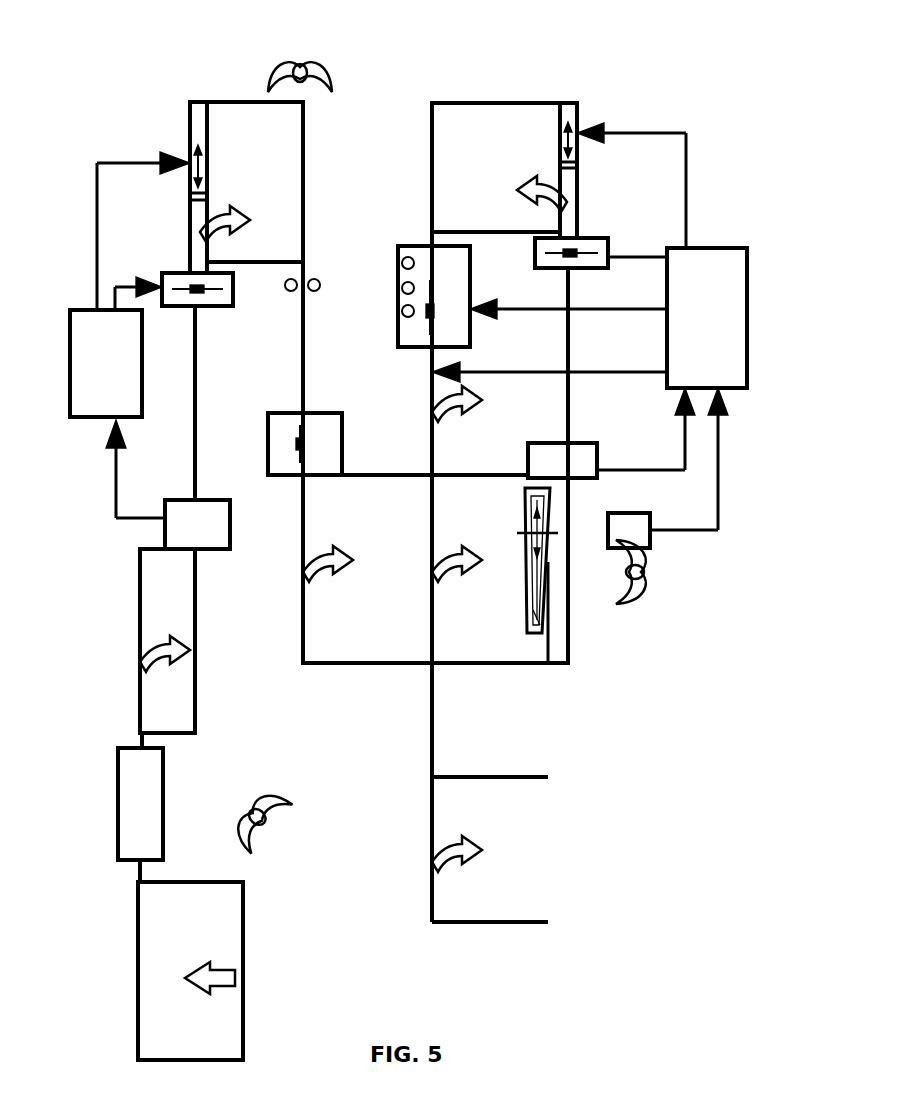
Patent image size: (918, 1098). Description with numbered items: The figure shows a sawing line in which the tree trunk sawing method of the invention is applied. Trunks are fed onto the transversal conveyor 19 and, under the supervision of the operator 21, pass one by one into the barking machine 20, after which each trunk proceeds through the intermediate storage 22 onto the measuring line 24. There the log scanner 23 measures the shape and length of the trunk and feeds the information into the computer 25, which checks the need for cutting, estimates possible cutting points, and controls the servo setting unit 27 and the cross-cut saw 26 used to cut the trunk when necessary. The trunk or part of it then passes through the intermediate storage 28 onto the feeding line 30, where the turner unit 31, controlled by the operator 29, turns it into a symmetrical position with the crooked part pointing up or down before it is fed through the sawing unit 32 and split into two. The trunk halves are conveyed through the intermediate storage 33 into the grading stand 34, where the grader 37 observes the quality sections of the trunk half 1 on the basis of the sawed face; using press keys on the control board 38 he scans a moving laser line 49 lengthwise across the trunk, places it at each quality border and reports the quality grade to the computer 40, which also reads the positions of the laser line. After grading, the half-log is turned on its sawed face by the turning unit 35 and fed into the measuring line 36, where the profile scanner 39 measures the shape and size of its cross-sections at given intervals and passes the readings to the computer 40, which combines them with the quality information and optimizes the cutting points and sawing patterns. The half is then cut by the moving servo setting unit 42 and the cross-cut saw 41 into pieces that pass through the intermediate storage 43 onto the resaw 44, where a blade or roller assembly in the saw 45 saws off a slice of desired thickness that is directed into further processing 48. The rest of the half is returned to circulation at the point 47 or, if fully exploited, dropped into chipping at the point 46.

The trunk half 1 is at (535, 612).
The transversal conveyor 19 is at (240, 1022).
The barking machine 20 is at (128, 805).
The operator 21 is at (272, 805).
The intermediate storage 22 is at (140, 640).
The log scanner 23 is at (205, 540).
The measuring line 24 is at (197, 385).
The computer 25 is at (95, 408).
The cross-cut saw 26 is at (215, 300).
The servo setting unit 27 is at (192, 135).
The intermediate storage 28 is at (288, 182).
The operator 29 is at (335, 75).
The feeding line 30 is at (305, 232).
The turner unit 31 is at (320, 282).
The sawing unit 32 is at (330, 432).
The intermediate storage 33 is at (315, 615).
The grading stand 34 is at (535, 655).
The turning unit 35 is at (550, 580).
The measuring line 36 is at (568, 545).
The grader 37 is at (640, 583).
The control board 38 is at (632, 522).
The profile scanner 39 is at (590, 450).
The computer 40 is at (735, 355).
The cross-cut saw 41 is at (600, 250).
The moving servo setting unit 42 is at (575, 120).
The intermediate storage 43 is at (497, 118).
The resaw 44 is at (430, 175).
The saw 45 is at (400, 322).
The chipping point 46 is at (455, 405).
The return-to-circulation point 47 is at (430, 530).
The further processing 48 is at (520, 872).
The laser line 49 is at (527, 535).